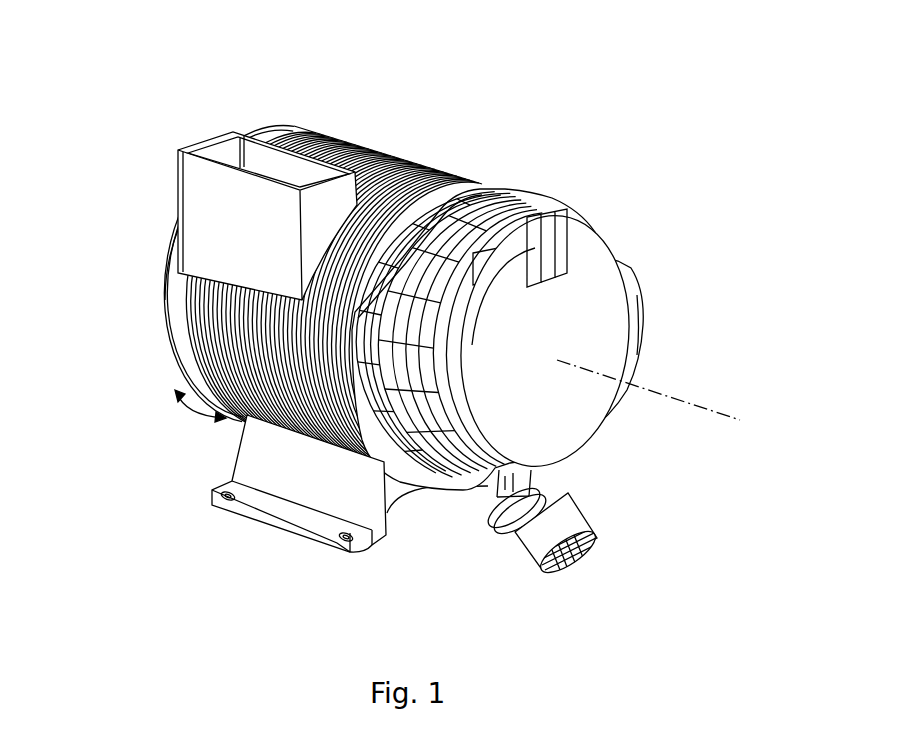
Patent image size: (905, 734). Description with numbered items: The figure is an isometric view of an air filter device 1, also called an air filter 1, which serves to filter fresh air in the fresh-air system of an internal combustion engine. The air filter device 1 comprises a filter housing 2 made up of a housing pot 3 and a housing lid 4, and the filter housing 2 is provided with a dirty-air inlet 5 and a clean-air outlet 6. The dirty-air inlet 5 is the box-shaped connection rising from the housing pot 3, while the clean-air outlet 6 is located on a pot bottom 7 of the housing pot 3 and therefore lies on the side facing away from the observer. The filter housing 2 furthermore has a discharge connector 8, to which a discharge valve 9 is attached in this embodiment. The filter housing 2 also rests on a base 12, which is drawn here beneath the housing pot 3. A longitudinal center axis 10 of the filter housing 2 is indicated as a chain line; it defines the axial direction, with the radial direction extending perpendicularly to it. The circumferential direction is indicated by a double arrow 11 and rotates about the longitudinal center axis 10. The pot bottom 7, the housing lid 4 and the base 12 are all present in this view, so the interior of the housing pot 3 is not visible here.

The air filter device 1 is at (667, 133).
The filter housing 2 is at (442, 162).
The housing pot 3 is at (385, 152).
The housing lid 4 is at (577, 380).
The dirty-air inlet 5 is at (203, 188).
The clean-air outlet 6 is at (168, 256).
The pot bottom 7 is at (168, 343).
The discharge connector 8 is at (490, 500).
The discharge valve 9 is at (577, 518).
The longitudinal center axis 10 is at (650, 388).
The circumferential direction 11 is at (193, 411).
The base 12 is at (297, 483).